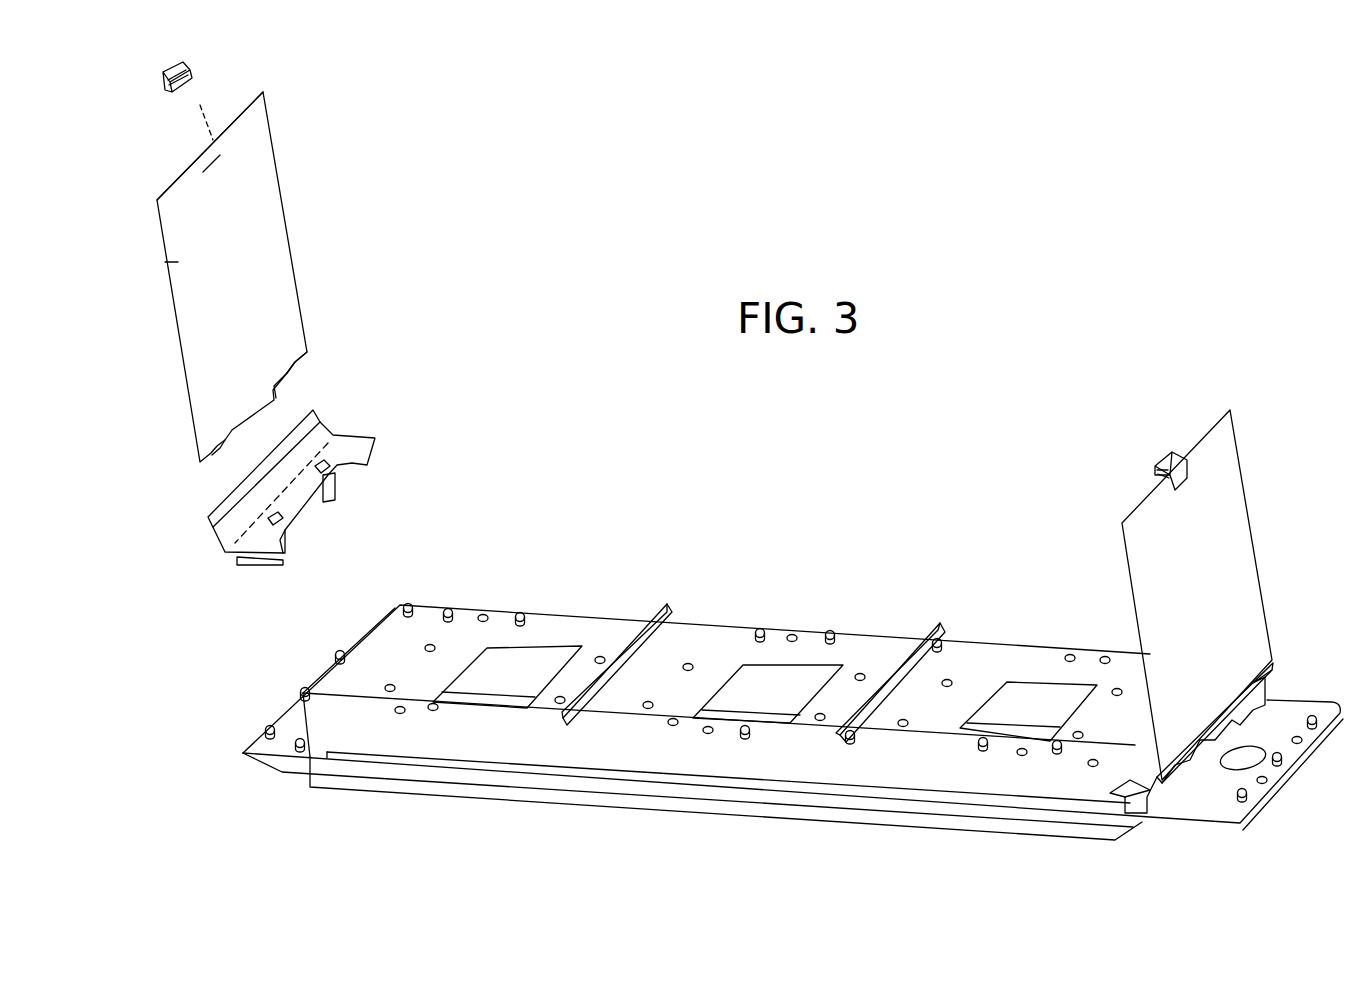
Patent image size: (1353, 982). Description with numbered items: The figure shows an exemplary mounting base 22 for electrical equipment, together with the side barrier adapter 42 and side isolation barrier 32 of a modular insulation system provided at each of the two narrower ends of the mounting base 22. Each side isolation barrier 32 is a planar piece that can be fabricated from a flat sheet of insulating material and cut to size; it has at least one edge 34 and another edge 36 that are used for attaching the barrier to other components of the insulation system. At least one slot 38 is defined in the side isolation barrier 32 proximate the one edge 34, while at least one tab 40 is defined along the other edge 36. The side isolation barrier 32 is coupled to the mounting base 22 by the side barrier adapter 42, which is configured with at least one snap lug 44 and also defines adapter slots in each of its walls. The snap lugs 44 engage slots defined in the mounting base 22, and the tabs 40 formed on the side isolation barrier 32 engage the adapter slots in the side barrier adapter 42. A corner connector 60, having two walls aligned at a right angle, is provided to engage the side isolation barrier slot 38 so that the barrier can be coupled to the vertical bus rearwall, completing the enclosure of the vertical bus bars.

The mounting base 22 is at (945, 806).
The side isolation barrier 32 is at (710, 436).
The edge 34 is at (168, 196).
The edge 36 is at (297, 362).
The slot 38 is at (188, 160).
The tab 40 is at (295, 384).
The side barrier adapter 42 is at (747, 611).
The snap lug 44 is at (340, 497).
The corner connector 60 is at (192, 70).